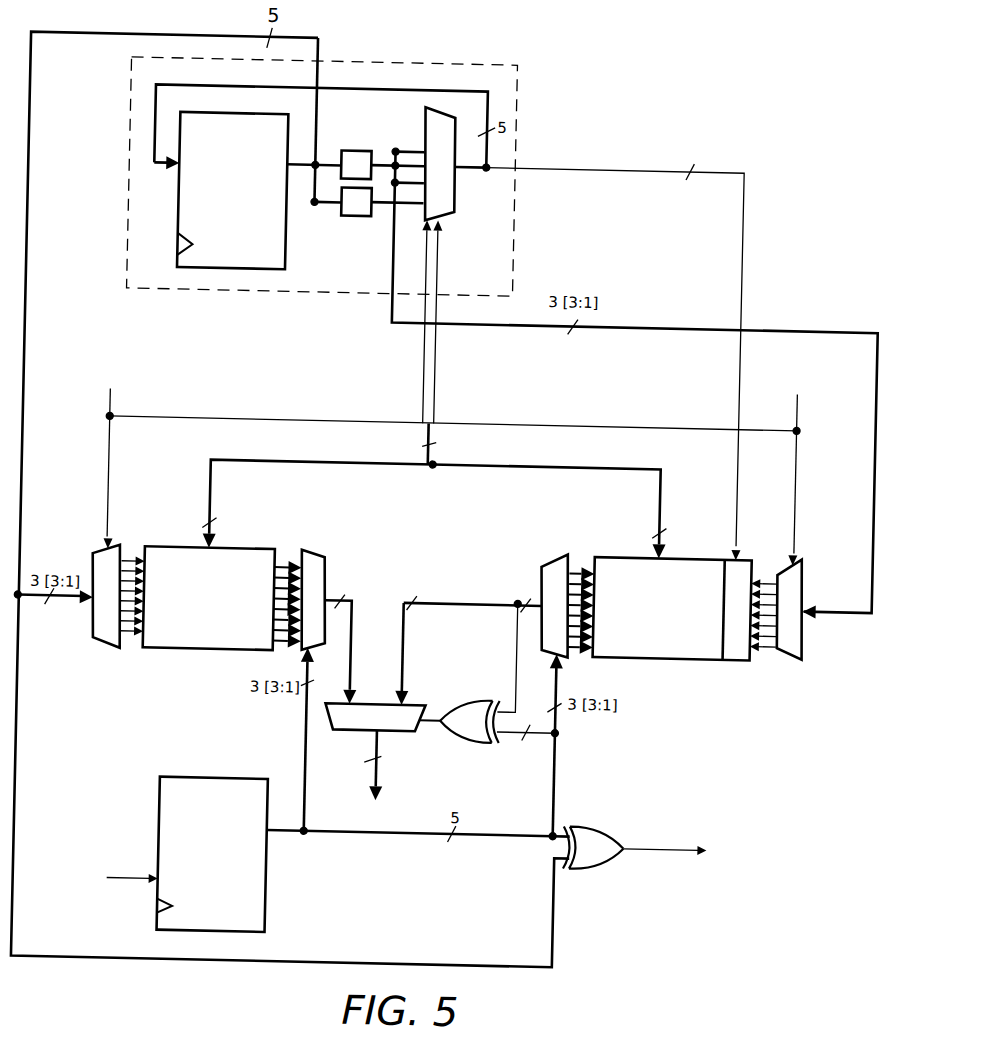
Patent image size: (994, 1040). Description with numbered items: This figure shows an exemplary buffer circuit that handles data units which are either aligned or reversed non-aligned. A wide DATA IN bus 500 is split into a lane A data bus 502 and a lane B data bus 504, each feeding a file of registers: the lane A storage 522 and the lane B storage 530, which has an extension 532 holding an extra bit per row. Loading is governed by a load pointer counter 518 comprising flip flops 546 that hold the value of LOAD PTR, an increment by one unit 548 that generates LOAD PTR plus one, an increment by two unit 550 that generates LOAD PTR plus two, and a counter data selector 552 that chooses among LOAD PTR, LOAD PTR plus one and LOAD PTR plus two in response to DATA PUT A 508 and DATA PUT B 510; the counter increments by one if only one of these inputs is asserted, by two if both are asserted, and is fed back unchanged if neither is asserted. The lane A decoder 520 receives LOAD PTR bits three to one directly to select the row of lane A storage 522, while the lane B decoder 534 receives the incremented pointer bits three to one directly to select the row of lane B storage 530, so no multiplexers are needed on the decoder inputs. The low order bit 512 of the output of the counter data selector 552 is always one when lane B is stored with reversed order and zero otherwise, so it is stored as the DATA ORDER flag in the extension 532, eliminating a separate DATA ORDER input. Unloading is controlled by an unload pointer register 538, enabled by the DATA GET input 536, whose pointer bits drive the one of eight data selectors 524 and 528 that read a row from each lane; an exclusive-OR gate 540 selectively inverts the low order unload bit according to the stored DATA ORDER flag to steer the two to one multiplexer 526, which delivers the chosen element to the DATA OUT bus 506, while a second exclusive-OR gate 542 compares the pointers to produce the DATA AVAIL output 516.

The data in bus 500 is at (439, 456).
The data A bus 502 is at (208, 516).
The data B bus 504 is at (657, 517).
The data out bus 506 is at (381, 770).
The DATA PUT A 508 is at (108, 401).
The DATA PUT B 510 is at (795, 404).
The low order bit 512 is at (568, 167).
The data avail output 516 is at (668, 848).
The load pointer logic 518 is at (122, 233).
The lane A decoder 520 is at (111, 659).
The lane A storage 522 is at (218, 658).
The lane A output multiplexer 524 is at (308, 554).
The output multiplexer 526 is at (421, 703).
The lane B output multiplexer 528 is at (548, 560).
The lane B storage 530 is at (664, 662).
The extension 532 is at (737, 660).
The lane B decoder 534 is at (794, 660).
The data get input 536 is at (136, 884).
The unload pointer register 538 is at (272, 891).
The XOR gate 540 is at (475, 744).
The XOR gate 542 is at (597, 869).
The load pointer register 546 is at (172, 223).
The plus one incrementer 548 is at (349, 153).
The plus two incrementer 550 is at (351, 220).
The counter data selector 552 is at (450, 191).